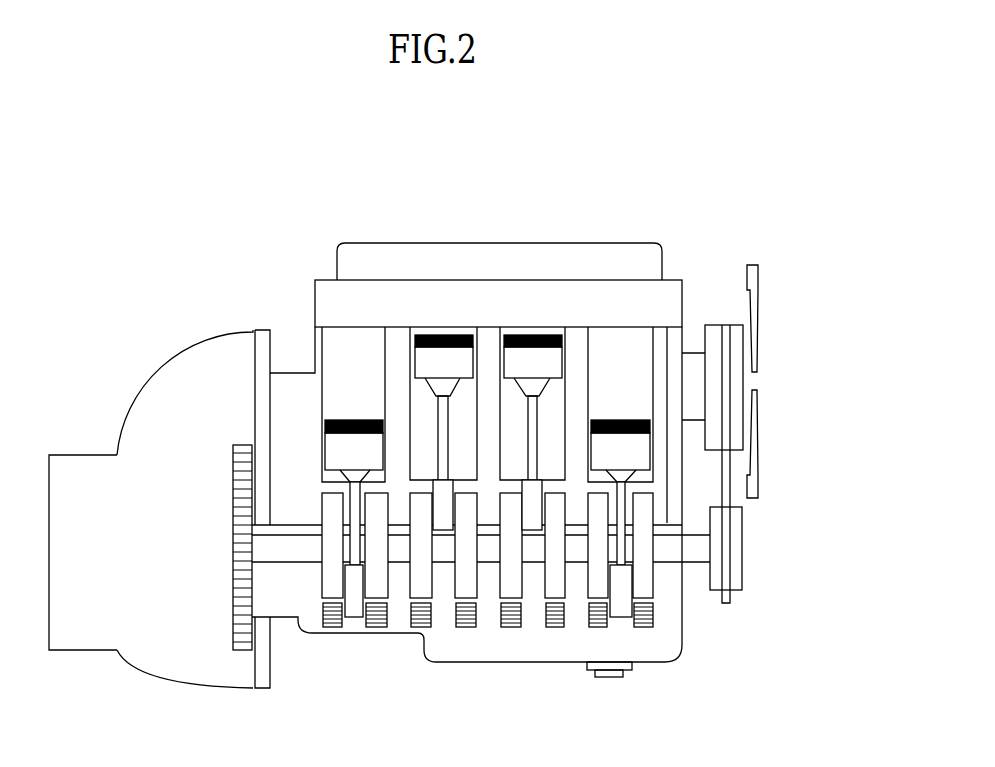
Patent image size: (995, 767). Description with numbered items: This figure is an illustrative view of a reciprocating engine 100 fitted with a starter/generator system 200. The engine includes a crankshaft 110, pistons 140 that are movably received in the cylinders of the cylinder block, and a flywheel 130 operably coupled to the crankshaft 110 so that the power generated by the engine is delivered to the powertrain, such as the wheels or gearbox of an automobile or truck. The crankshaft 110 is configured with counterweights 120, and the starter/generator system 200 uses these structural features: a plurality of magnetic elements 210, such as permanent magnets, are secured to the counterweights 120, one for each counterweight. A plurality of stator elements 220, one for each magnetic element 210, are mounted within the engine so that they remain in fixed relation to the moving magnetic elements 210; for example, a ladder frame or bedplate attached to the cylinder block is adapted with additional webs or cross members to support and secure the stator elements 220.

The reciprocating engine 100 is at (718, 210).
The crankshaft 110 is at (668, 550).
The counterweights 120 is at (648, 507).
The flywheel 130 is at (233, 472).
The pistons 140 is at (335, 417).
The starter/generator system 200 is at (655, 632).
The magnetic elements 210 is at (652, 607).
The stator elements 220 is at (652, 615).